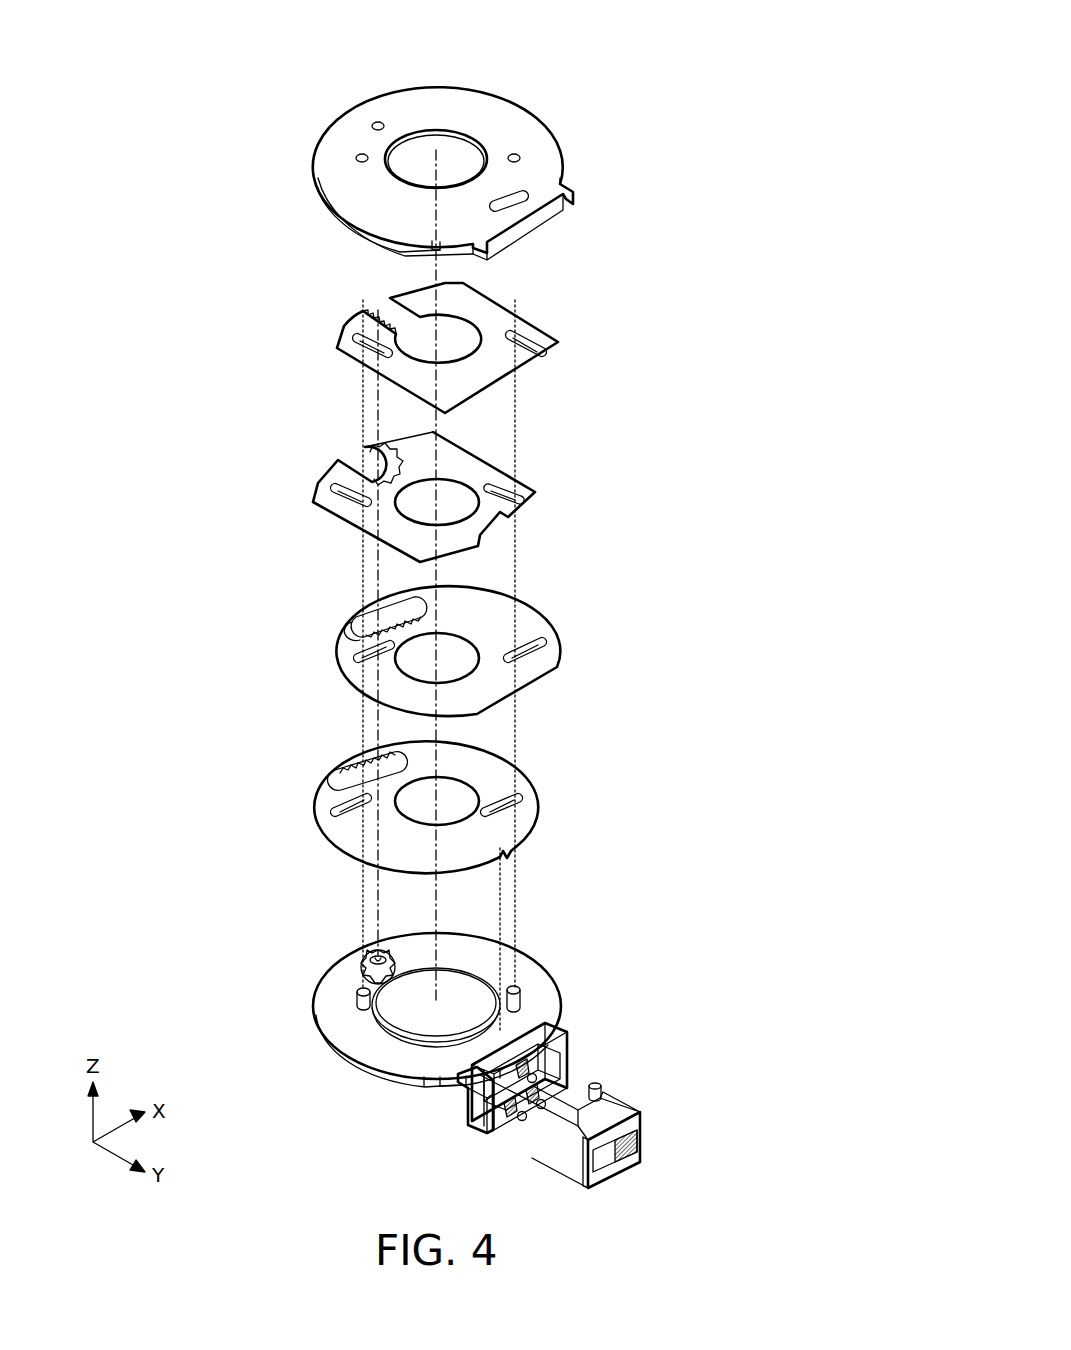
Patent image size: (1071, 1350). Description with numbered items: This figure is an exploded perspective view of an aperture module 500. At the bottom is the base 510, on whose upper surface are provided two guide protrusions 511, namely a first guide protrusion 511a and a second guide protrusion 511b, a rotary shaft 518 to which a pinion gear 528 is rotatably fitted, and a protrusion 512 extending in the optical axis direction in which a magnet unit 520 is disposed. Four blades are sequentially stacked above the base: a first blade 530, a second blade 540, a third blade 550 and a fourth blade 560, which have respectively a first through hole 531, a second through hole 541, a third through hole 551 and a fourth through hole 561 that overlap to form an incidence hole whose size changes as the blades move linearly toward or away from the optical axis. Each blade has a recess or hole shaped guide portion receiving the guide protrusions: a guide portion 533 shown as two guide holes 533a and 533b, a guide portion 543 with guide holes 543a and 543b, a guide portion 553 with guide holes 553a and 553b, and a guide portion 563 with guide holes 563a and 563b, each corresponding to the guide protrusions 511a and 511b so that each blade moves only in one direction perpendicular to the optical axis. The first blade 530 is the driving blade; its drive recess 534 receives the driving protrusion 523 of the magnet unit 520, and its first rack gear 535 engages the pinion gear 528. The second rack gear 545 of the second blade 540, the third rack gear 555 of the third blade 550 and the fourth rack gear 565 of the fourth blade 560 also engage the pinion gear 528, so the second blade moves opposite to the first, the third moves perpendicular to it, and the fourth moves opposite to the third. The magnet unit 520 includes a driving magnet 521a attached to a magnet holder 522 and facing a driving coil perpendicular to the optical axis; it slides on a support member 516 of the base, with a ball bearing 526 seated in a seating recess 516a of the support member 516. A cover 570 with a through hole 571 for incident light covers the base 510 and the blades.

The aperture module 500 is at (508, 82).
The cover 570 is at (553, 162).
The through hole 571 is at (460, 158).
The fourth blade 560 is at (560, 343).
The fourth through hole 561 is at (452, 338).
The guide portion 563 is at (247, 325).
The first slot of third plate 563a is at (358, 345).
The second slot of third plate 563b is at (508, 345).
The fourth rack gear 565 is at (372, 308).
The third blade 550 is at (535, 492).
The third through hole 551 is at (455, 494).
The guide portion 553 is at (247, 470).
The first slot of second plate 553a is at (340, 492).
The second slot of second plate 553b is at (486, 495).
The third rack gear 555 is at (368, 448).
The second blade 540 is at (556, 660).
The second through hole 541 is at (455, 650).
The guide portion 543 is at (247, 653).
The first slot of first plate 543a is at (362, 658).
The second slot of first plate 543b is at (508, 655).
The second rack gear 545 is at (362, 628).
The first blade 530 is at (523, 816).
The first through hole 531 is at (455, 796).
The guide portion 533 is at (228, 806).
The first slot of blade plate 533a is at (340, 810).
The second slot of blade plate 533b is at (486, 808).
The drive recess 534 is at (516, 850).
The first rack gear 535 is at (340, 775).
The base 510 is at (358, 1050).
The guide protrusions 511 is at (195, 985).
The guide protrusion 511a is at (356, 996).
The guide protrusion 511b is at (507, 1000).
The protrusion 512 is at (475, 1095).
The support member 516 is at (546, 1024).
The seating recess 516a is at (538, 1107).
The rotary shaft 518 is at (370, 955).
The pinion gear 528 is at (360, 963).
The magnet unit 520 is at (728, 1088).
The magnet holder 522 is at (628, 1118).
The driving protrusion 523 is at (603, 1100).
The ball bearing 526 is at (542, 1102).
The driving magnet 521a is at (620, 1158).